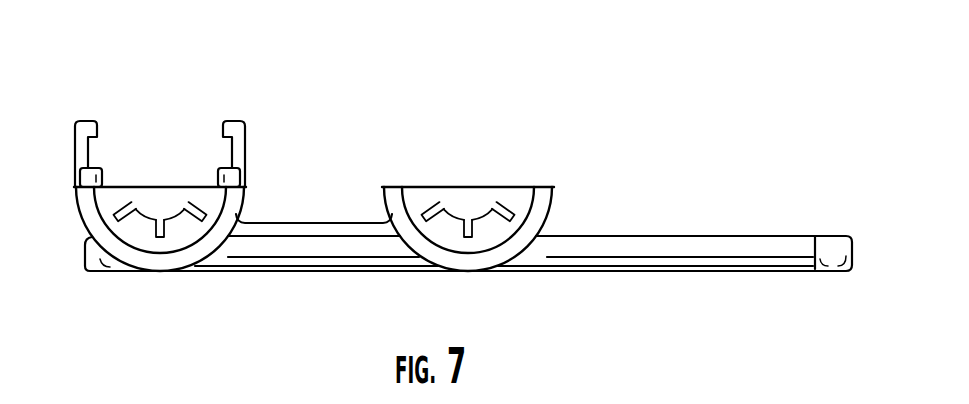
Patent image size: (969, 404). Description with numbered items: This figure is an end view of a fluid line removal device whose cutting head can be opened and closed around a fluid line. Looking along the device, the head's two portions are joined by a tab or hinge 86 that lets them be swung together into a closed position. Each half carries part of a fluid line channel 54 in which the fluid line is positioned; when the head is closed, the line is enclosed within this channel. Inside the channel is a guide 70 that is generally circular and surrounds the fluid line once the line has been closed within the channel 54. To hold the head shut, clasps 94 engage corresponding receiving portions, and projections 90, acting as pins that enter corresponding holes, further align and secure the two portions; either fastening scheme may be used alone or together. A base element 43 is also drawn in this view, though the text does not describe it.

The rail / base strip 43 is at (677, 258).
The fluid line channel 54 is at (162, 186).
The guide 70 is at (462, 213).
The tab or hinge 86 is at (326, 223).
The projection 90 is at (98, 168).
The clasp 94 is at (73, 122).